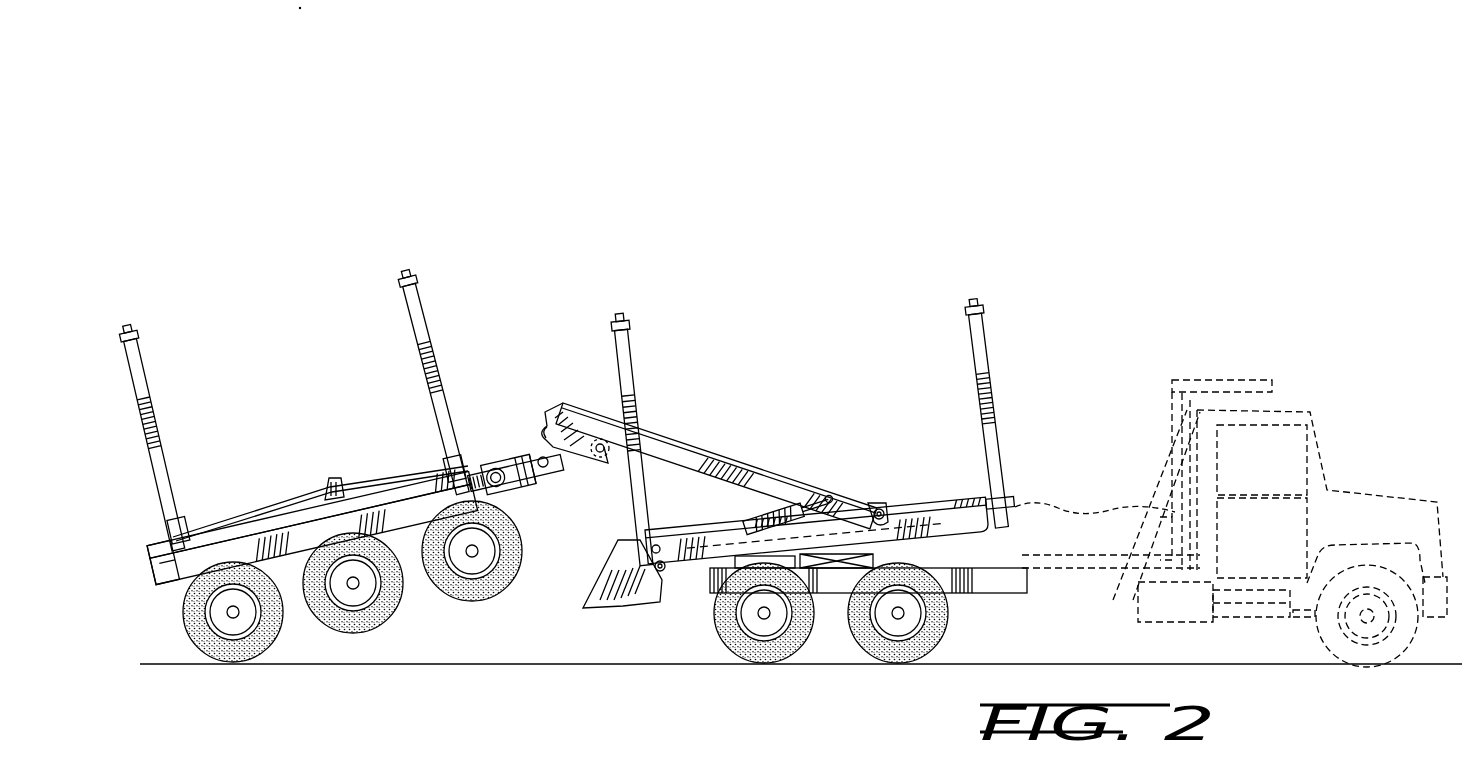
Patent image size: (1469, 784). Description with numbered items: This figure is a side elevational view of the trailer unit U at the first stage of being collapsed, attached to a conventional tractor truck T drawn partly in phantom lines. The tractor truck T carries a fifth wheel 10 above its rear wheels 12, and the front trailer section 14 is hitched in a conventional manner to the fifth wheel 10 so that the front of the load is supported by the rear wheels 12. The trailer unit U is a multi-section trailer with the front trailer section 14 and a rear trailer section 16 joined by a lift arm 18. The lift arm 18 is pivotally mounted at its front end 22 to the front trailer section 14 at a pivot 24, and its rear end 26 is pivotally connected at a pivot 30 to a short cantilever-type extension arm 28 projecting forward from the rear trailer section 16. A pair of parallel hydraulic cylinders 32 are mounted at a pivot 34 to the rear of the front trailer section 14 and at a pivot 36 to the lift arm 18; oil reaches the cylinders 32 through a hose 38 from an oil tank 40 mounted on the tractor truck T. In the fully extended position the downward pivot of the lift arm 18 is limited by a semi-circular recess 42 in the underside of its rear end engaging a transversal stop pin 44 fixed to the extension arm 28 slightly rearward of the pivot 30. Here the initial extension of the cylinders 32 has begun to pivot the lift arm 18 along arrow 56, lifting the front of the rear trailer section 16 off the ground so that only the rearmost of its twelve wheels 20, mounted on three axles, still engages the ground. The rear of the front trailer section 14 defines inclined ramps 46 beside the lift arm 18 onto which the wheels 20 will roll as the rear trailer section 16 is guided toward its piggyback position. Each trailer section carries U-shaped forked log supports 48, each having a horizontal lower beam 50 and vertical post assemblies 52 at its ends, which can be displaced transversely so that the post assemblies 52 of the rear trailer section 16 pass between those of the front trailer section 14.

The fifth wheel 10 is at (850, 568).
The rear wheels 12 is at (860, 643).
The front trailer section 14 is at (942, 497).
The rear trailer section 16 is at (357, 474).
The lift arm 18 is at (692, 437).
The wheels 20 is at (280, 622).
The front end 22 is at (867, 503).
The pivot 24 is at (886, 518).
The rear end 26 is at (579, 416).
The extension arm 28 is at (573, 464).
The pivot 30 is at (604, 450).
The cylinders 32 is at (783, 508).
The pivot 34 is at (666, 571).
The pivot 36 is at (829, 499).
The hose 38 is at (1078, 512).
The oil tank 40 is at (1147, 545).
The semi-circular recess 42 is at (541, 440).
The stop pin 44 is at (545, 468).
The inclined ramps 46 is at (585, 597).
The log supports 48 is at (403, 300).
The lower beam 50 is at (185, 535).
The post assemblies 52 is at (153, 427).
The arrow 56 is at (720, 440).
The tractor truck T is at (1235, 376).
The trailer unit U is at (819, 266).